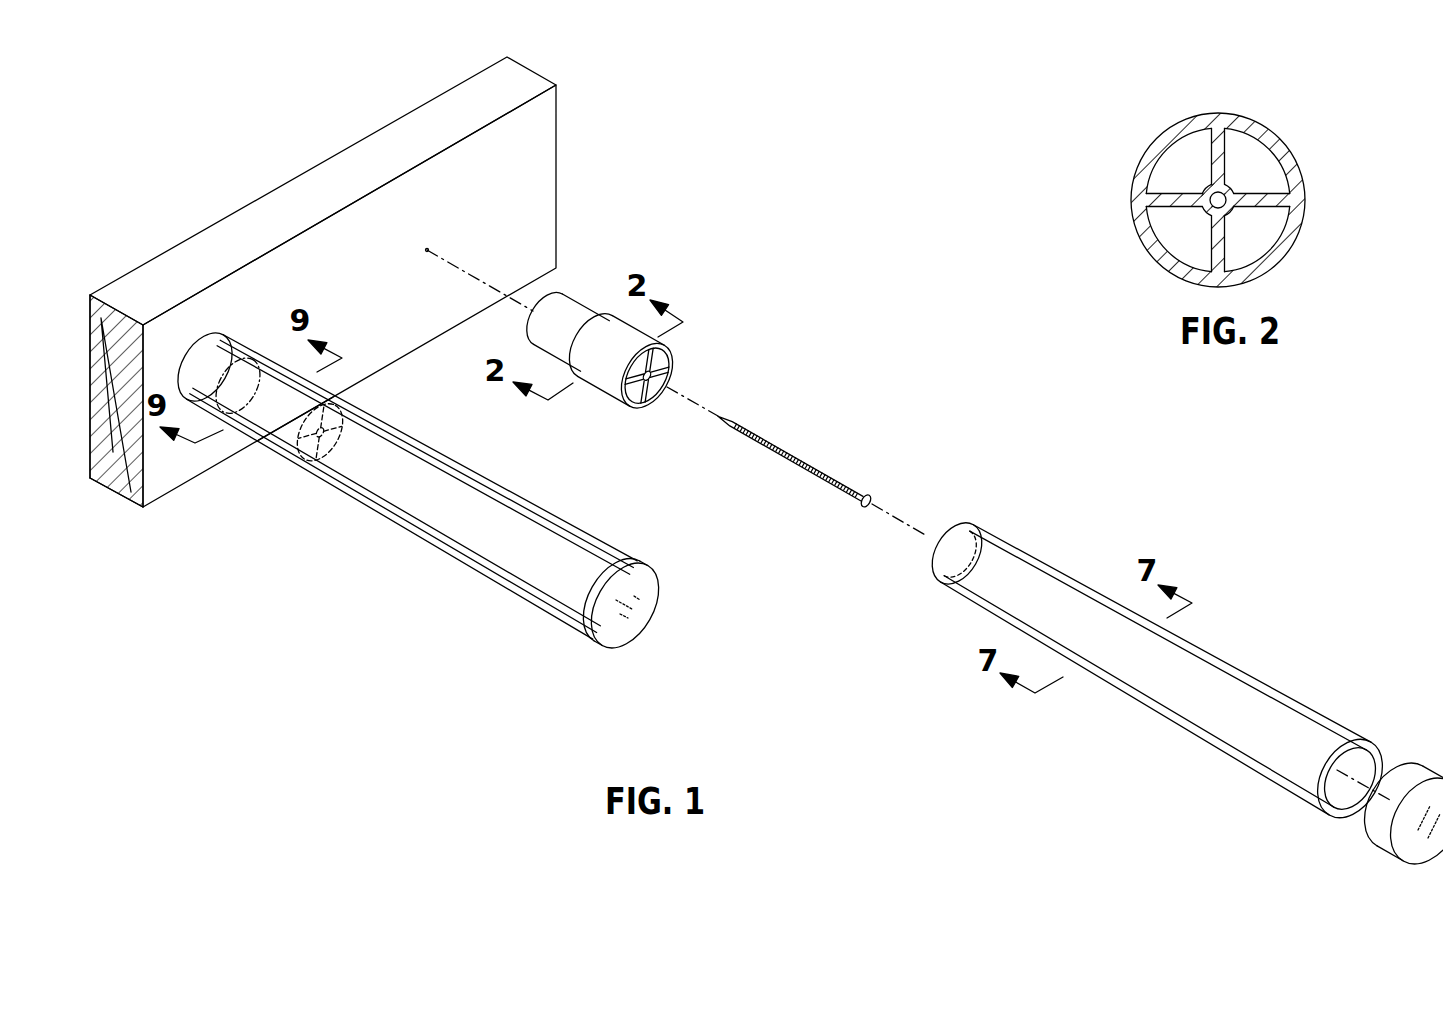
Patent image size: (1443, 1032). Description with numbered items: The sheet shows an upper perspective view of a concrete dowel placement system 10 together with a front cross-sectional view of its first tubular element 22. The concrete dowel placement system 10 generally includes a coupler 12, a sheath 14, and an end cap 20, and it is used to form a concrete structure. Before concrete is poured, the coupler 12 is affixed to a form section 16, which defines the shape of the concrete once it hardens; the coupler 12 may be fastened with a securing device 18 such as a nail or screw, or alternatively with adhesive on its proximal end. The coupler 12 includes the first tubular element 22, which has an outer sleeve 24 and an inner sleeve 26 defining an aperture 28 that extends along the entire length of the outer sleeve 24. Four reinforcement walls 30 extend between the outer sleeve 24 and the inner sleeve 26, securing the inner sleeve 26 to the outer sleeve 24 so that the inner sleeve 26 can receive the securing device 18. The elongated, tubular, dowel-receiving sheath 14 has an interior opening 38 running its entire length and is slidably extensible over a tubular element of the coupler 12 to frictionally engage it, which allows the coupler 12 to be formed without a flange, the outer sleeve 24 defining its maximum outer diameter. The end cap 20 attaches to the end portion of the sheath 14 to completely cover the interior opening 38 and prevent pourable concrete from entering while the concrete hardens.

In FIG. 1, the concrete dowel placement system 10 is at (930, 297).
In FIG. 1, the coupler 12 is at (604, 270).
In FIG. 1, the sheath 14 is at (1159, 694).
In FIG. 1, the form section 16 is at (237, 227).
In FIG. 1, the securing device 18 is at (792, 434).
In FIG. 1, the end cap 20 is at (1394, 880).
In FIG. 2, the first tubular element 22 is at (1232, 153).
In FIG. 2, the outer sleeve 24 is at (1184, 199).
In FIG. 2, the inner sleeve 26 is at (1192, 238).
In FIG. 2, the aperture 28 is at (1273, 157).
In FIG. 2, the reinforcement wall 30 is at (1188, 172).
In FIG. 1, the interior opening 38 is at (1343, 803).